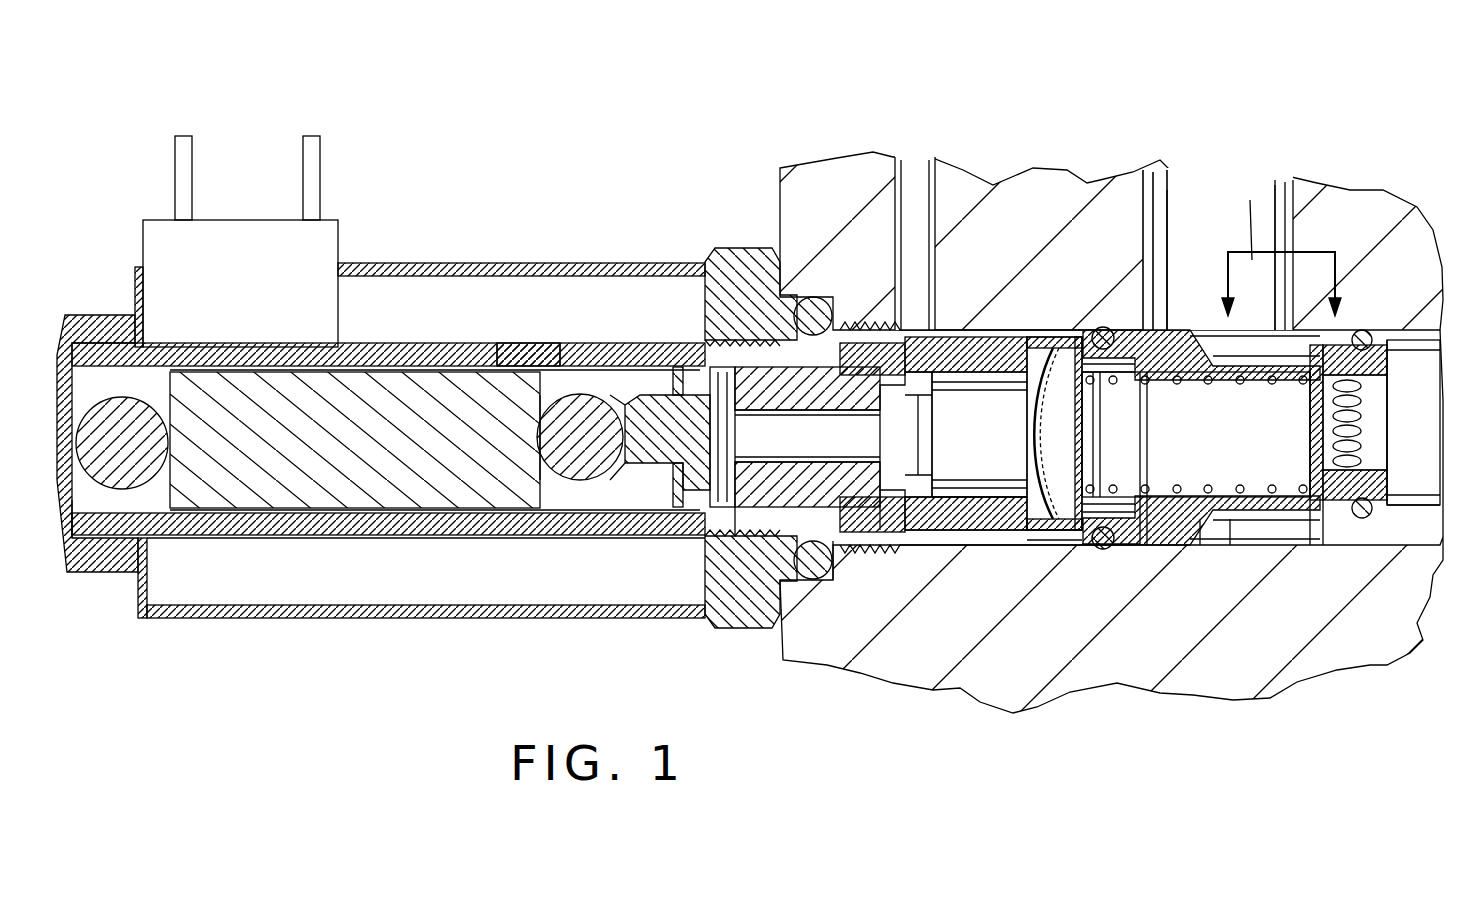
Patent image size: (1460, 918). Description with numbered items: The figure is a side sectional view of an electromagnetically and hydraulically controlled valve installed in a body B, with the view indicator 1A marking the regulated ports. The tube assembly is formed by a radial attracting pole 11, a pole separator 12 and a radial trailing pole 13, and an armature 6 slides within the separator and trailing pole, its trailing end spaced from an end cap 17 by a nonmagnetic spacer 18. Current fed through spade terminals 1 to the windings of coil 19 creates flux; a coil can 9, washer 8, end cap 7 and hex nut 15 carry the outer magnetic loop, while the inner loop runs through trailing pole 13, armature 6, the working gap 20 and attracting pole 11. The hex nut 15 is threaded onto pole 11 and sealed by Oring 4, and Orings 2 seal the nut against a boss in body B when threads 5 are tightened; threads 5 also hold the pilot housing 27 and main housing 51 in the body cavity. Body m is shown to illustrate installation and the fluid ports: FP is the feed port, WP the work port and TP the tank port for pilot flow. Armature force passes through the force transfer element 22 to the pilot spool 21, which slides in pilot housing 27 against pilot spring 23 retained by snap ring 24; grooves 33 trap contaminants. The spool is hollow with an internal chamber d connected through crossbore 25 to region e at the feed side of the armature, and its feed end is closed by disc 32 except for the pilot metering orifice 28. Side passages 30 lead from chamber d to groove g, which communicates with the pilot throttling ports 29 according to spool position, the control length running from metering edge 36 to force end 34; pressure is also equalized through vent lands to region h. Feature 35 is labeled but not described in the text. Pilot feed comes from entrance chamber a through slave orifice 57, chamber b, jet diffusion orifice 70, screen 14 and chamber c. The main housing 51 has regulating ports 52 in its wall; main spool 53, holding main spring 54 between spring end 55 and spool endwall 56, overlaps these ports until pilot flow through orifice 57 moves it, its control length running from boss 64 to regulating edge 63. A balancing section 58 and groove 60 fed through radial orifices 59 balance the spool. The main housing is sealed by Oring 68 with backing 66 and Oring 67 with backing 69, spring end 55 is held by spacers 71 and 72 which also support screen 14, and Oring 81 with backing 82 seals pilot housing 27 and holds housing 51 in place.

The spade terminals 1 is at (235, 150).
The Orings 2 is at (790, 298).
The Oring 4 is at (865, 343).
The threads 5 is at (850, 320).
The armature 6 is at (300, 460).
The end cap 7 is at (90, 570).
The washer 8 is at (134, 598).
The coil can 9 is at (225, 618).
The radial attracting pole 11 is at (678, 508).
The pole separator 12 is at (545, 470).
The radial trailing pole 13 is at (470, 505).
The screen 14 is at (1062, 337).
The hex nut 15 is at (738, 262).
The end cap 17 is at (85, 355).
The nonmagnetic spacer 18 is at (118, 350).
The coil 19 is at (362, 560).
The working gap 20 is at (520, 345).
The pilot spool 21 is at (965, 337).
The force transfer element 22 is at (590, 365).
The pilot spring 23 is at (660, 365).
The snap ring 24 is at (642, 365).
The crossbore 25 is at (807, 436).
The pilot housing 27 is at (1012, 337).
The pilot metering orifice 28 is at (938, 430).
The pilot throttling ports 29 is at (950, 330).
The side passages 30 is at (892, 434).
The disc 32 is at (935, 452).
The grooves 33 is at (760, 540).
The force end 34 is at (648, 505).
The shoulder 35 is at (902, 530).
The metering edge 36 is at (845, 555).
The main stage housing 51 is at (1190, 545).
The regulating ports 52 is at (1272, 497).
The main spool 53 is at (1218, 510).
The main spring 54 is at (1238, 250).
The spring end 55 is at (1055, 330).
The spool endwall 56 is at (1322, 515).
The slave orifice 57 is at (1318, 440).
The balancing section 58 is at (1360, 340).
The radial orifices 59 is at (1390, 430).
The groove 60 is at (1370, 345).
The regulating edge 63 is at (1285, 330).
The boss 64 is at (1158, 330).
The backing 66 is at (1370, 520).
The Oring 67 is at (1110, 550).
The Oring 68 is at (1375, 520).
The backing 69 is at (1125, 550).
The jet diffusion orifice 70 is at (1092, 445).
The spacer 71 is at (1025, 545).
The spacer 72 is at (1045, 545).
The Oring 81 is at (1000, 545).
The backing 82 is at (965, 545).
The entrance chamber a is at (1433, 486).
The chamber b is at (1178, 448).
The chamber c is at (1004, 448).
The internal chamber d is at (804, 448).
The feed side of armature e is at (610, 480).
The groove g is at (807, 436).
The region h is at (120, 575).
The body m is at (440, 270).
The body B is at (1383, 655).
The tank port TP is at (912, 165).
The work port WP is at (1250, 215).
The feed port FP is at (1430, 340).
The view of regulated ports 1A is at (1281, 284).